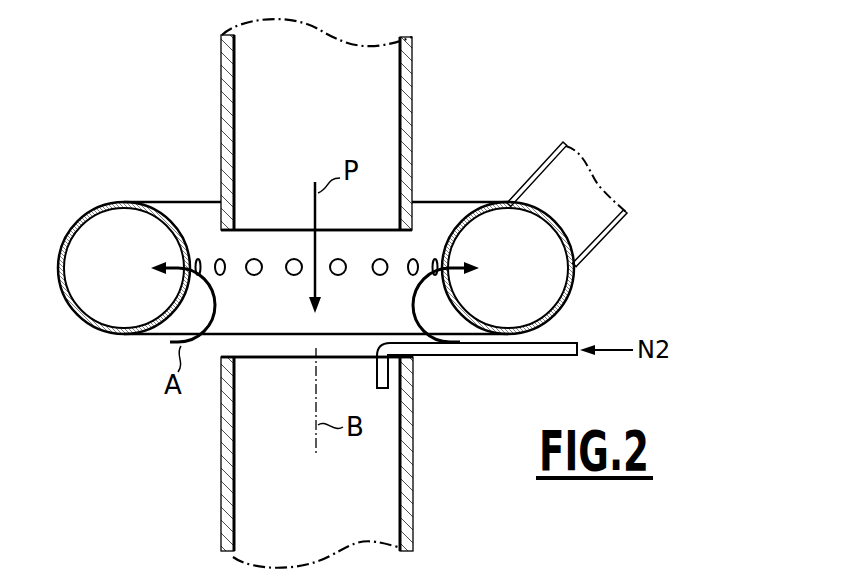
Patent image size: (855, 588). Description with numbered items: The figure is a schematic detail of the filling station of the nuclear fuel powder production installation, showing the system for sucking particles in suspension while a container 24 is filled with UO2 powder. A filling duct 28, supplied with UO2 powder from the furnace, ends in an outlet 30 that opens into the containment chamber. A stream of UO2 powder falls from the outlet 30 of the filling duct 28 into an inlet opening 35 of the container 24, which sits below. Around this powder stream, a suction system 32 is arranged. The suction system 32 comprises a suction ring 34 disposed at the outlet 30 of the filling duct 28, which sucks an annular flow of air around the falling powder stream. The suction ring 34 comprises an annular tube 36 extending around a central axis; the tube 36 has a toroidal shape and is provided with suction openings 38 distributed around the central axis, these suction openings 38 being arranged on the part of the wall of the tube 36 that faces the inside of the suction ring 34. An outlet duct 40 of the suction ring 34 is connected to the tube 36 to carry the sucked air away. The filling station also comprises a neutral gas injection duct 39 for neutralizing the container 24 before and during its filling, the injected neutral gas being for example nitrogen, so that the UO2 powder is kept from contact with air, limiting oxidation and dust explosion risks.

The container 24 is at (220, 483).
The filling duct 28 is at (413, 85).
The outlet 30 is at (372, 230).
The suction system 32 is at (686, 309).
The suction ring 34 is at (570, 297).
The inlet opening 35 is at (263, 357).
The annular tube 36 is at (62, 290).
The suction openings 38 is at (253, 258).
The neutral gas injection duct 39 is at (470, 357).
The outlet duct 40 is at (620, 230).